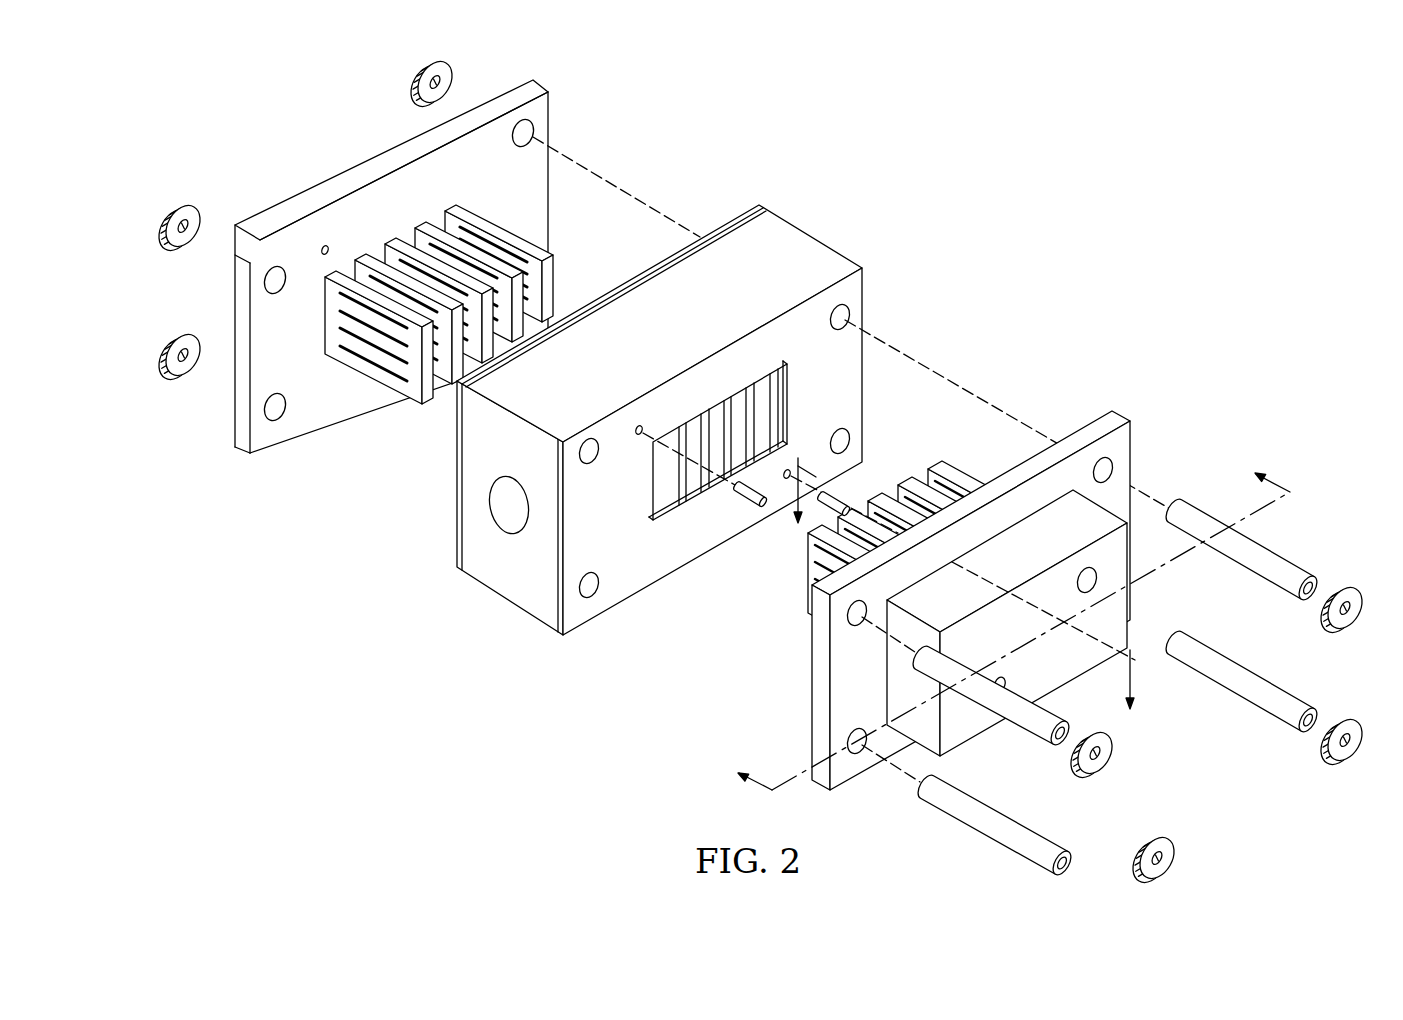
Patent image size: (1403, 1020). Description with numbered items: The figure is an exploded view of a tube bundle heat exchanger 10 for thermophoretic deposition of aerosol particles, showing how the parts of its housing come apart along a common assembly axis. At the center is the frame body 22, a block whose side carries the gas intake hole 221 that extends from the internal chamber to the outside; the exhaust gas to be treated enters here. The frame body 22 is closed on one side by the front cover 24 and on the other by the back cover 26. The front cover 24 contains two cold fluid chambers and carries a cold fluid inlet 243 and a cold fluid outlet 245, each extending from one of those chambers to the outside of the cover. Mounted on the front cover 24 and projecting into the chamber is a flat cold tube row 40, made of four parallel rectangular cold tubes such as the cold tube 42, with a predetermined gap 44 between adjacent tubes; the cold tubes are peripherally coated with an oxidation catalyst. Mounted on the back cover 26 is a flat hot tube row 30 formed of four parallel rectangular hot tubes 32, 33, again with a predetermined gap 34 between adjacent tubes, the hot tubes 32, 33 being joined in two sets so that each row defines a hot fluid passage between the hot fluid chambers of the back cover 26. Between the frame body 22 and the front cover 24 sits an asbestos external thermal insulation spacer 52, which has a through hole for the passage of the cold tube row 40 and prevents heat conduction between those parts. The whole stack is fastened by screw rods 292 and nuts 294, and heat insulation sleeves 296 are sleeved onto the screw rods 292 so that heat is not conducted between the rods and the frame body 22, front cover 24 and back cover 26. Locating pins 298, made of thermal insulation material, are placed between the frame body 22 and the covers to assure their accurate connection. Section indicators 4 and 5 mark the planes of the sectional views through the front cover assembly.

The tube bundle heat exchanger 10 is at (275, 166).
The frame body 22 is at (632, 417).
The front cover 24 is at (1118, 426).
The back cover 26 is at (541, 86).
The hot tube row 30 is at (513, 304).
The hot tube 32 is at (489, 304).
The hot tube 33 is at (367, 354).
The gap 34 is at (403, 384).
The cold tube row 40 is at (892, 500).
The cold tube 42 is at (956, 467).
The gap 44 is at (820, 560).
The external thermal insulation spacer 52 is at (620, 580).
The gas intake hole 221 is at (503, 510).
The cold fluid inlet 243 is at (1047, 600).
The cold fluid outlet 245 is at (1004, 676).
The screw rod 292 is at (1076, 866).
The nut 294 is at (183, 374).
The heat insulation sleeve 296 is at (1272, 562).
The locating pin 298 is at (746, 492).
The section line 4- 4 is at (970, 585).
The section line 5- 5 is at (1015, 620).